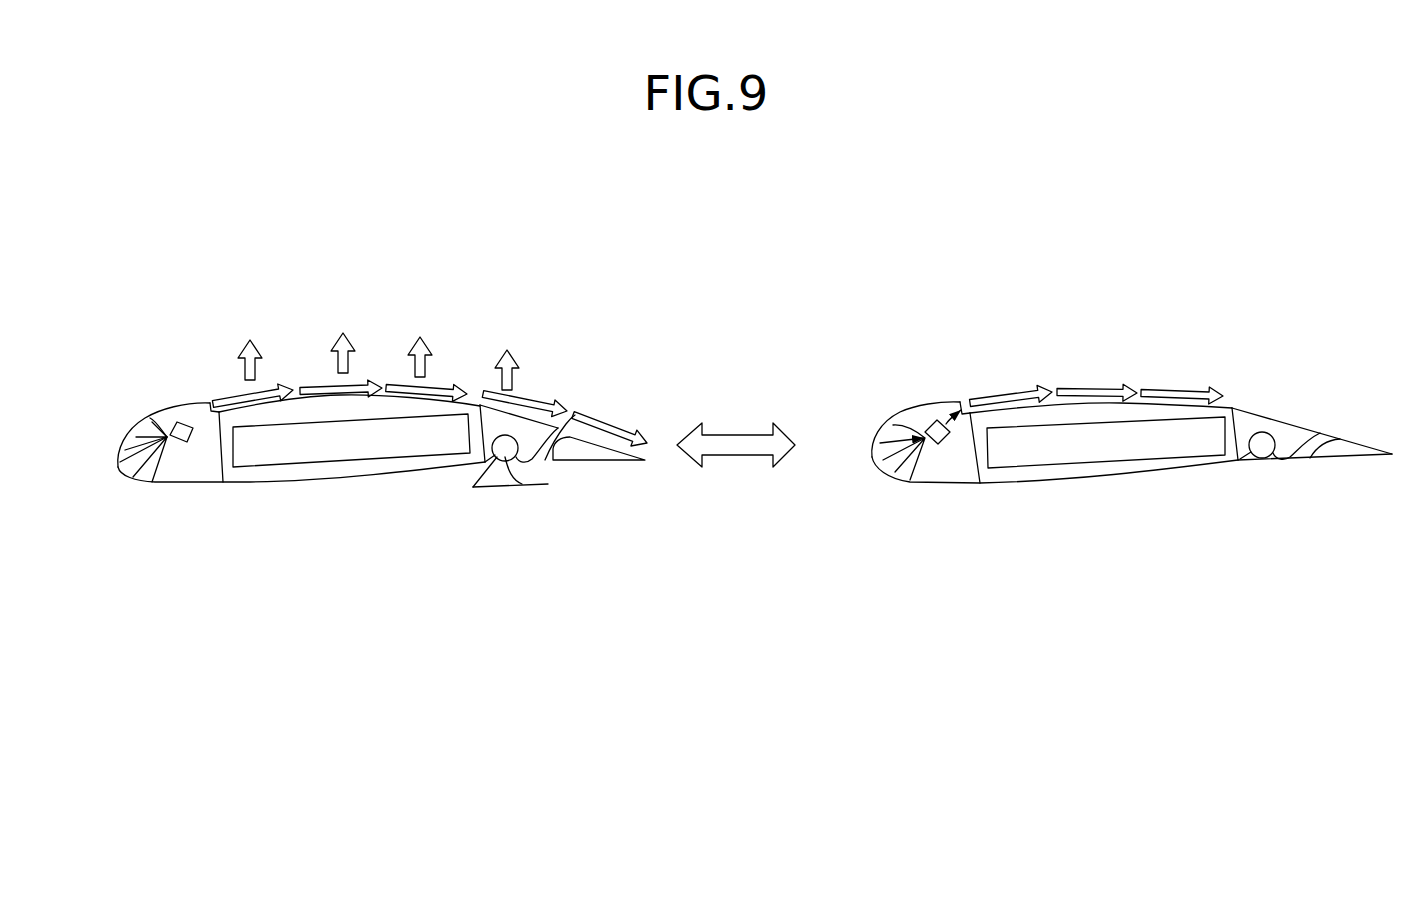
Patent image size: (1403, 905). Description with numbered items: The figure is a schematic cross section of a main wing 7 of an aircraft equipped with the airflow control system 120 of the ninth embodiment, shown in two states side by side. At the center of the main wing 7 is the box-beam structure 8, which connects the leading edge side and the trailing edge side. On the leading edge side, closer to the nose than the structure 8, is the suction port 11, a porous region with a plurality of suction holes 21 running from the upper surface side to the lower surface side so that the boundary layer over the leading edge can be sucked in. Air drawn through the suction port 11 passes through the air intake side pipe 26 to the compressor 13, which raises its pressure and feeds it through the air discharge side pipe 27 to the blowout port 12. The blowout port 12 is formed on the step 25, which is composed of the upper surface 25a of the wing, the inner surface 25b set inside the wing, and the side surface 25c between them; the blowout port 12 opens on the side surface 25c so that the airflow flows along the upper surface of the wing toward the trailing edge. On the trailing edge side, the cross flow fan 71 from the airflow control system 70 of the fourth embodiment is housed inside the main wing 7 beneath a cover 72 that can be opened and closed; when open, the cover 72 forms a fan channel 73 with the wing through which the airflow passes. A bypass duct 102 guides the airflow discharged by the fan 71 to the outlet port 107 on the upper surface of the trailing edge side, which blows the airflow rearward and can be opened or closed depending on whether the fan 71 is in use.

The main wing 7 is at (330, 361).
The structure 8 is at (324, 473).
The suction port 11 is at (92, 427).
The blowout port 12 is at (206, 409).
The compressor 13 is at (163, 430).
The suction holes 21 is at (166, 437).
The step 25 is at (287, 413).
The upper surface 25a is at (188, 396).
The inner surface 25b is at (243, 403).
The side surface 25c is at (213, 413).
The air intake side pipe 26 is at (153, 481).
The air discharge side pipe 27 is at (201, 410).
The airflow control system 70 is at (515, 515).
The fan 71 is at (480, 488).
The cover 72 is at (513, 487).
The fan channel 73 is at (540, 470).
The bypass duct 102 is at (565, 418).
The outlet port 107 is at (587, 430).
The airflow control system 120 is at (556, 422).